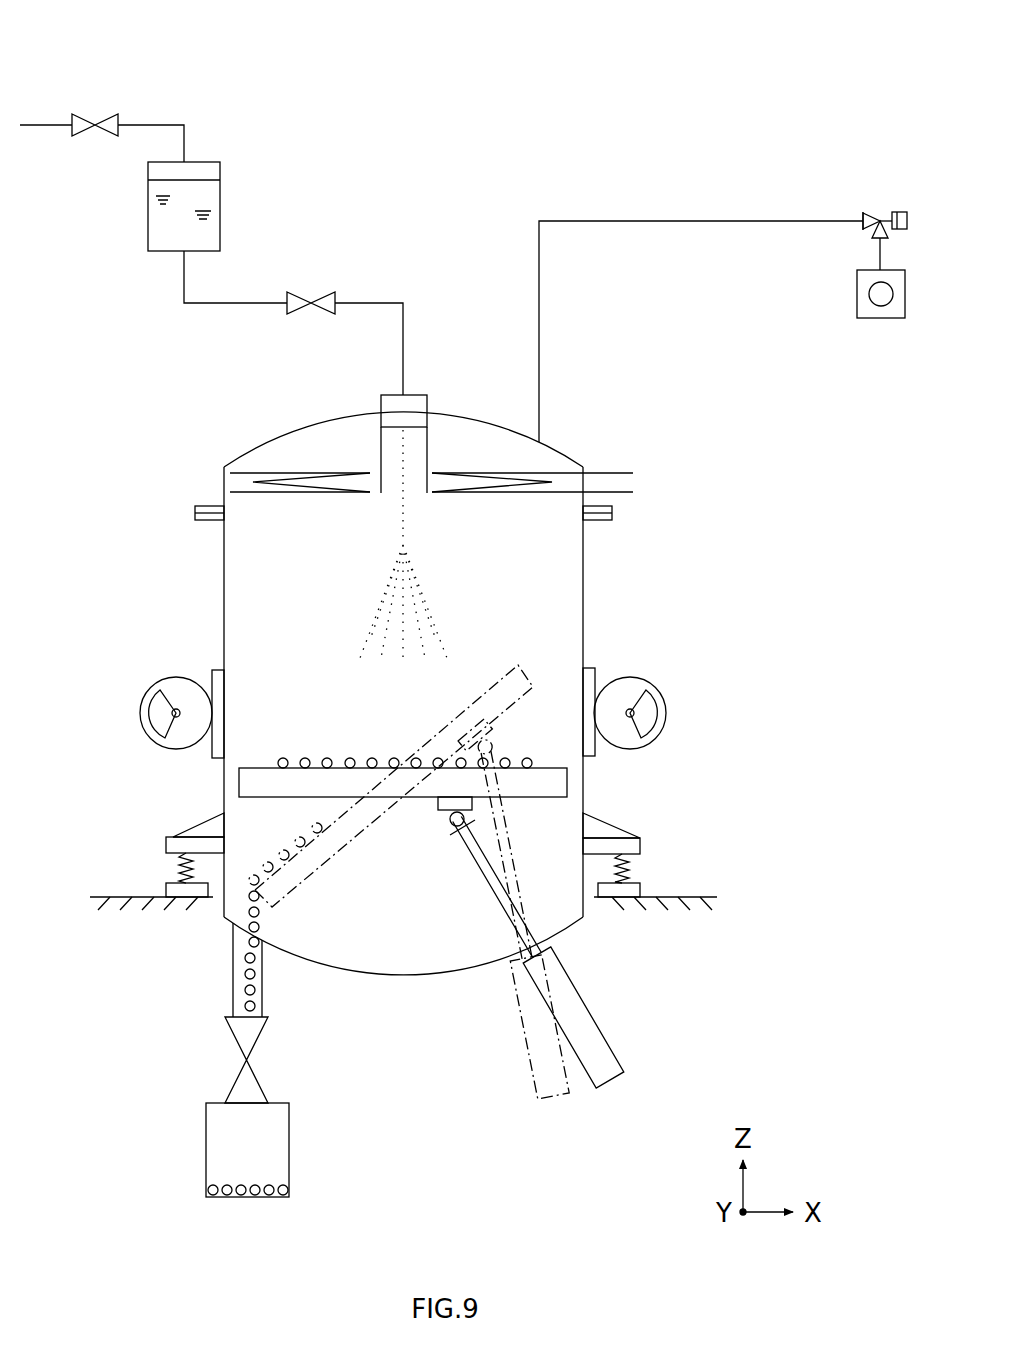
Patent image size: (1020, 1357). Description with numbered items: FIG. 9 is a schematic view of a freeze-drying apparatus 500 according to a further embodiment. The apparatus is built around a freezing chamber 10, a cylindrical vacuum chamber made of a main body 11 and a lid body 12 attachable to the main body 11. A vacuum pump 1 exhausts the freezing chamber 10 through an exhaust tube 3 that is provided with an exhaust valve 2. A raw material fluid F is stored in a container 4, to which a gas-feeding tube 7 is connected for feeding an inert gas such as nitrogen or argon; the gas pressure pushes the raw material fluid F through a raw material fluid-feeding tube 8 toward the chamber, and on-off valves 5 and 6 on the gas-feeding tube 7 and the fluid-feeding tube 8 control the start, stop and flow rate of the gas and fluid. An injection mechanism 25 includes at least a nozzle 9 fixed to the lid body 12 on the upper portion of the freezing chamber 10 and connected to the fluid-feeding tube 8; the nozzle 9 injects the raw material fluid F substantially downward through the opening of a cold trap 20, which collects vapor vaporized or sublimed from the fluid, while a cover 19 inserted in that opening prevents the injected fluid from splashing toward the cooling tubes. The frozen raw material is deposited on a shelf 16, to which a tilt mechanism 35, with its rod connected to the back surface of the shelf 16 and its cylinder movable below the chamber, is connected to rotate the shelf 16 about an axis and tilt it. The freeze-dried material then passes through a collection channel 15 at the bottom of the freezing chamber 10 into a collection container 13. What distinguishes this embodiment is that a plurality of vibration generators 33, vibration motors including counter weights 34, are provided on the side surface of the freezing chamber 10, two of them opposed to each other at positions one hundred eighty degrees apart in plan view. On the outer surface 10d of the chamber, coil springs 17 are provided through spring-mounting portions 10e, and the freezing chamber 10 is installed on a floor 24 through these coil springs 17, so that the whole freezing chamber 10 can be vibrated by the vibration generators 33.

The freeze-drying apparatus 500 is at (452, 93).
The vacuum pump 1 is at (863, 316).
The exhaust valve 2 is at (868, 212).
The exhaust tube 3 is at (682, 219).
The container 4 is at (188, 206).
The raw material fluid F is at (163, 202).
The on-off valve 5 is at (112, 116).
The on-off valve 6 is at (327, 298).
The gas-feeding tube 7 is at (160, 123).
The raw material fluid-feeding tube 8 is at (395, 301).
The nozzle 9 is at (420, 395).
The freezing chamber 10 is at (407, 664).
The outer surface 10d is at (222, 575).
The spring-mounting portion 10e is at (190, 826).
The main body 11 is at (587, 598).
The lid body 12 is at (485, 417).
The collection container 13 is at (290, 1146).
The collection channel 15 is at (233, 969).
The shelf 16 is at (240, 775).
The coil spring 17 is at (178, 868).
The cover 19 is at (381, 455).
The cold trap 20 is at (603, 468).
The floor 24 is at (100, 896).
The injection mechanism 25 is at (371, 384).
The vibration generator 33 is at (401, 694).
The counter weight 34 is at (140, 716).
The tilt mechanism 35 is at (600, 987).